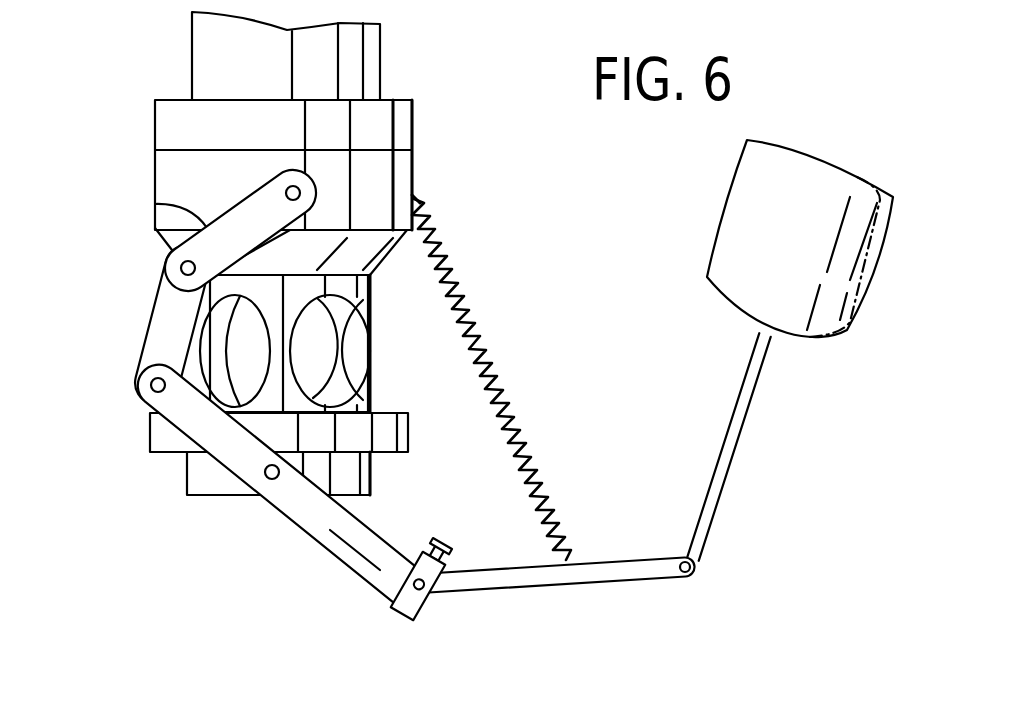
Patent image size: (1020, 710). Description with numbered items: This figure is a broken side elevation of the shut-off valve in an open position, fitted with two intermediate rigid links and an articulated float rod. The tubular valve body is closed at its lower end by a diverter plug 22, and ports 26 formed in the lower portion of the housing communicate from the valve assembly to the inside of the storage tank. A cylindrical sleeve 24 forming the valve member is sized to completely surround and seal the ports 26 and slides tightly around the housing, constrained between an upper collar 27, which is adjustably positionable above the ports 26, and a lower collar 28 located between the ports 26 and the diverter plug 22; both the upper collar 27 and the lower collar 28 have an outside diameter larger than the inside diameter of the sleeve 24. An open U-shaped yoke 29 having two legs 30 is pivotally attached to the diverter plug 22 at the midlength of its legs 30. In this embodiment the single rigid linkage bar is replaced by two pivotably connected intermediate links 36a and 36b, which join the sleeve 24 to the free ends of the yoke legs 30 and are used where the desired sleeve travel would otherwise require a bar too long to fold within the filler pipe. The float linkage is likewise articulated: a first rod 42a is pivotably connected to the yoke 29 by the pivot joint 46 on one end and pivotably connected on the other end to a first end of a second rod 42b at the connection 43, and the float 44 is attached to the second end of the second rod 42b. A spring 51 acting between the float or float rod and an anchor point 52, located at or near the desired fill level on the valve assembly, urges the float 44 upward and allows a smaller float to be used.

The diverter plug 22 is at (375, 478).
The sleeve 24 is at (155, 162).
The ports 26 is at (323, 326).
The upper collar 27 is at (413, 130).
The lower collar 28 is at (450, 414).
The yoke 29 is at (290, 523).
The yoke legs 30 is at (357, 567).
The intermediate link 36a is at (155, 205).
The intermediate link 36b is at (148, 327).
The first rod 42a is at (518, 590).
The second rod 42b is at (742, 462).
The pivot pin 43 is at (697, 563).
The float 44 is at (860, 302).
The pivot joint 46 is at (396, 608).
The spring 51 is at (502, 363).
The anchor point 52 is at (417, 193).